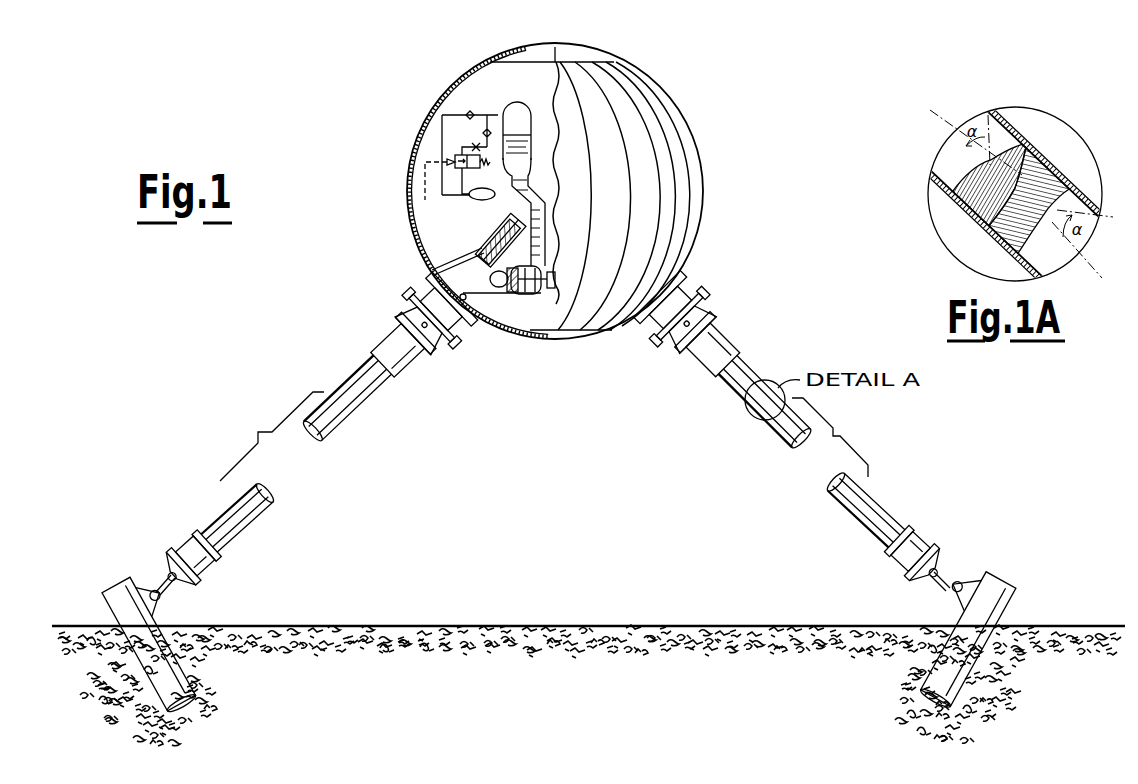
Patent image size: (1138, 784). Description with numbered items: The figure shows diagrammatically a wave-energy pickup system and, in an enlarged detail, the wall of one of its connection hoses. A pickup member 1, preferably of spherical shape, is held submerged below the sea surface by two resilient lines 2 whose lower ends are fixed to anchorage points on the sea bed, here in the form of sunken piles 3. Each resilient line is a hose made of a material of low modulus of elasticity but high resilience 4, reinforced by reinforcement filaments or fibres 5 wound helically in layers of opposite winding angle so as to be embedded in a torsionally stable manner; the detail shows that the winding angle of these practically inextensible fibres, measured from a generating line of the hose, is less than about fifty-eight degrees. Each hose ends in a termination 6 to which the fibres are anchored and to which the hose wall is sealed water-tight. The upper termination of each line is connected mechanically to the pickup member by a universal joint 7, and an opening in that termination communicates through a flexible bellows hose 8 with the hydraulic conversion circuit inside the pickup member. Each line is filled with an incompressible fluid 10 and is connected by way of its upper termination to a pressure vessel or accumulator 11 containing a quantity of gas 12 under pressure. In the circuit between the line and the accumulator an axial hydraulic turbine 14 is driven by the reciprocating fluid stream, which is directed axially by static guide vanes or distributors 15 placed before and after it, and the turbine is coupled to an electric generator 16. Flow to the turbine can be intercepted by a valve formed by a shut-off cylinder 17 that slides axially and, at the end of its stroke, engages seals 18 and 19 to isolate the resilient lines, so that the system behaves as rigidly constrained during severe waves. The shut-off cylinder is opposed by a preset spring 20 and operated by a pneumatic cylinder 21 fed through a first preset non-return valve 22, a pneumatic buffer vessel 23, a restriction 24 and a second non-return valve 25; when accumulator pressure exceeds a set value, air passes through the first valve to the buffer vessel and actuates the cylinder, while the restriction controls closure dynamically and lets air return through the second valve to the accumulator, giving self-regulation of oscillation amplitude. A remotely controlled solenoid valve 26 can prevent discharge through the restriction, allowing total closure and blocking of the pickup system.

In FIG. 1, the pickup member 1 is at (695, 152).
In FIG. 1, the resilient line 2 is at (352, 410).
In FIG. 1, the sunken pile 3 is at (110, 584).
In FIG. 1A, the hose material of low modulus of elasticity but high resilience 4 is at (1022, 121).
In FIG. 1A, the reinforcement filaments or fibres 5 is at (1082, 196).
In FIG. 1, the termination 6 is at (407, 352).
In FIG. 1, the universal joint 7 is at (452, 340).
In FIG. 1, the flexible bellows hose 8 is at (437, 296).
In FIG. 1, the incompressible fluid 10 is at (525, 146).
In FIG. 1, the pressure vessel or accumulator 11 is at (512, 104).
In FIG. 1, the gas 12 is at (521, 123).
In FIG. 1, the axial hydraulic turbine 14 is at (517, 295).
In FIG. 1, the static guide vanes or distributors 15 is at (507, 295).
In FIG. 1, the electric generator 16 is at (551, 271).
In FIG. 1, the shut-off cylinder 17 is at (494, 243).
In FIG. 1, the seal 18 is at (487, 262).
In FIG. 1, the seal 19 is at (451, 280).
In FIG. 1, the preset spring 20 is at (509, 236).
In FIG. 1, the pneumatic cylinder 21 is at (490, 279).
In FIG. 1, the first preset non-return valve 22 is at (467, 112).
In FIG. 1, the pneumatic buffer vessel 23 is at (469, 195).
In FIG. 1, the restriction 24 is at (470, 147).
In FIG. 1, the second non-return valve 25 is at (484, 134).
In FIG. 1, the remotely controlled solenoid valve 26 is at (447, 162).